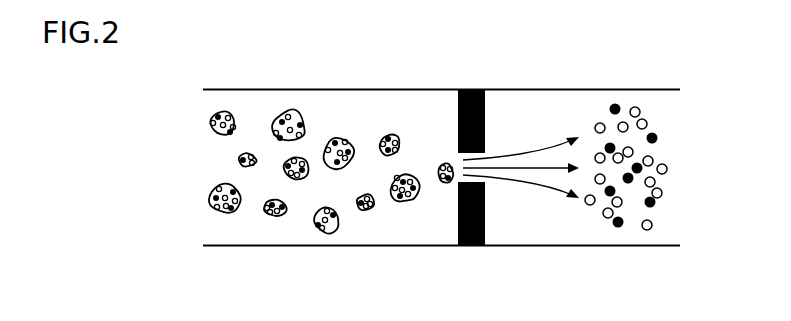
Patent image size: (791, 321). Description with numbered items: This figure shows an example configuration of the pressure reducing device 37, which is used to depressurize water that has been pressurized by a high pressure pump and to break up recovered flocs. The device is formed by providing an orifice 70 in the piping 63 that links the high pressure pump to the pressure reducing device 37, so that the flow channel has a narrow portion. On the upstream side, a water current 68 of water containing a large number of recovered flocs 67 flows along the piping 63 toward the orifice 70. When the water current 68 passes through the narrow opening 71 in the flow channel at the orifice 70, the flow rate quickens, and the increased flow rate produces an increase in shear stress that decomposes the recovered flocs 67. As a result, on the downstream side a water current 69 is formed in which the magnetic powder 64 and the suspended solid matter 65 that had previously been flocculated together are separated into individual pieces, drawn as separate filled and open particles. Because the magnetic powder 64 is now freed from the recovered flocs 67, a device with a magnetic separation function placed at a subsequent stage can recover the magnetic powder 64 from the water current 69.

The piping 63 is at (283, 88).
The water current 69 is at (535, 246).
The pressure reducing device 37 is at (453, 169).
The orifice 70 is at (470, 246).
The narrow opening 71 is at (478, 163).
The water current 68 is at (278, 233).
The recovered flocs 67 is at (342, 222).
The suspended solid matter 65 is at (604, 217).
The magnetic powder 64 is at (618, 228).